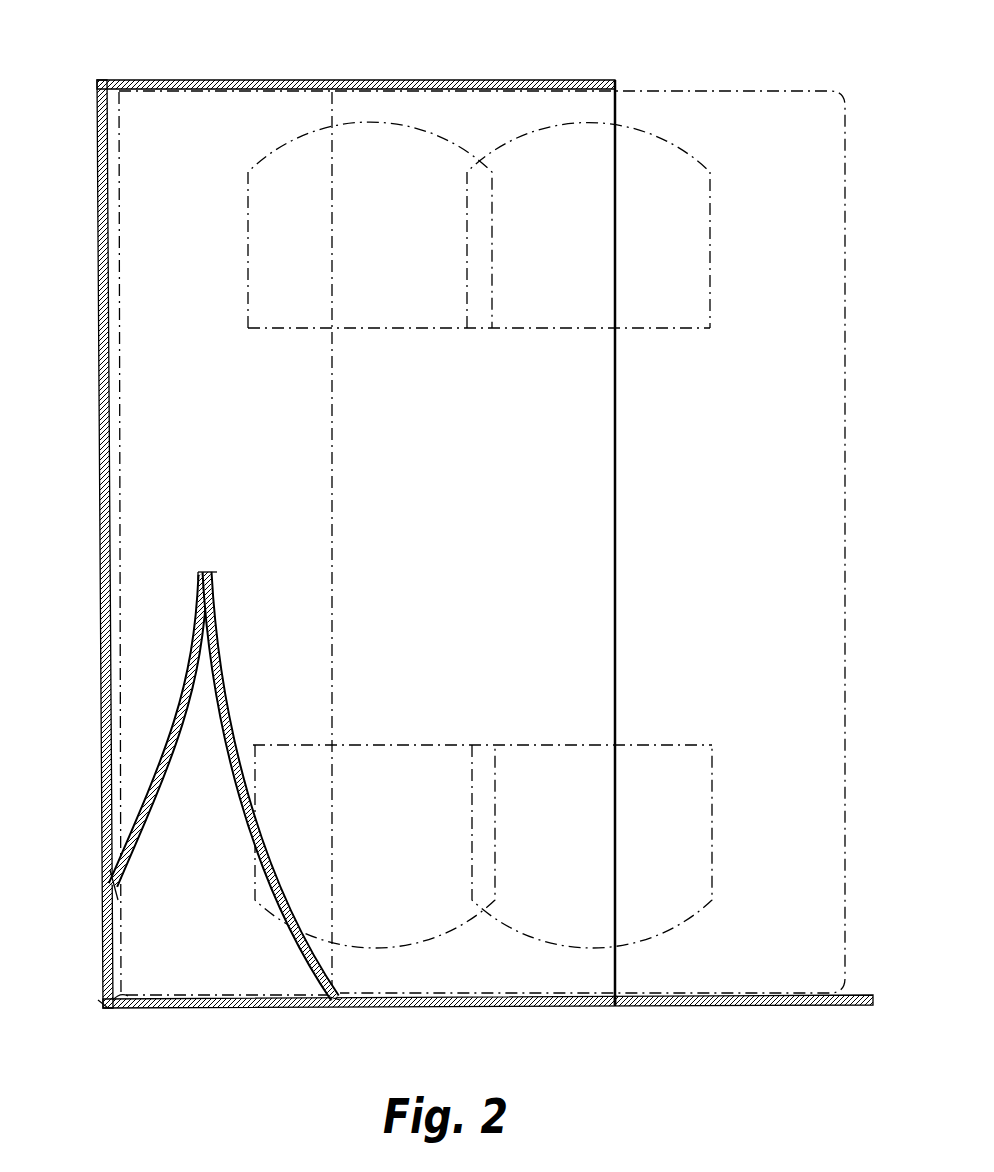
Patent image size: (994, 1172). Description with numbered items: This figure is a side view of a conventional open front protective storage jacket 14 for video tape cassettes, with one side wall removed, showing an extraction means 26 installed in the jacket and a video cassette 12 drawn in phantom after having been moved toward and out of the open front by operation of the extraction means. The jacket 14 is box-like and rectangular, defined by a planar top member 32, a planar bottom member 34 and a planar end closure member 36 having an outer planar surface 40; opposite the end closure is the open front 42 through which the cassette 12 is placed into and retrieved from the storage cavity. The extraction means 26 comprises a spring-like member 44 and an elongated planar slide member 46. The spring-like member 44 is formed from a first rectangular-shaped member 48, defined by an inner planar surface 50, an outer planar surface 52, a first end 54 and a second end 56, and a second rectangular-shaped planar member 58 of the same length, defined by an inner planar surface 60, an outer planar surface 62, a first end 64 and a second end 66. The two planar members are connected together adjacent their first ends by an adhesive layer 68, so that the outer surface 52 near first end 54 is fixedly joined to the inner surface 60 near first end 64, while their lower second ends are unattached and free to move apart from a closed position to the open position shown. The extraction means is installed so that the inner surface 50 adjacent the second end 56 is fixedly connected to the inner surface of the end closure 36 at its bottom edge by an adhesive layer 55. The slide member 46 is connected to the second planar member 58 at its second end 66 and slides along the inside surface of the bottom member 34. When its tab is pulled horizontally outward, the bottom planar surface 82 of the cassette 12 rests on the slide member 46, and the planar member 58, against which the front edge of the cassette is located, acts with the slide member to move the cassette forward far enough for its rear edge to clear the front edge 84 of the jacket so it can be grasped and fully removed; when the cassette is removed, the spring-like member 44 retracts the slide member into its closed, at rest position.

The video cassette 12 is at (752, 90).
The protective storage jacket 14 is at (405, 80).
The extraction means 26 is at (122, 738).
The top member 32 is at (336, 80).
The bottom member 34 is at (473, 1031).
The end closure member 36 is at (82, 544).
The outer planar surface 40 is at (98, 222).
The open front 42 is at (656, 522).
The spring-like member 44 is at (227, 747).
The slide member 46 is at (640, 1007).
The first rectangular-shaped member 48 is at (122, 730).
The inner planar surface 50 is at (130, 823).
The outer planar surface 52 is at (123, 862).
The first end 54 is at (200, 572).
The adhesive layer 55 is at (103, 1010).
The second end 56 is at (130, 1004).
The second rectangular-shaped planar member 58 is at (277, 747).
The inner planar surface 60 is at (248, 826).
The outer planar surface 62 is at (260, 785).
The first end 64 is at (217, 572).
The second end 66 is at (343, 996).
The adhesive layer 68 is at (207, 570).
The bottom planar surface 82 is at (757, 1006).
The front edge 84 is at (620, 565).